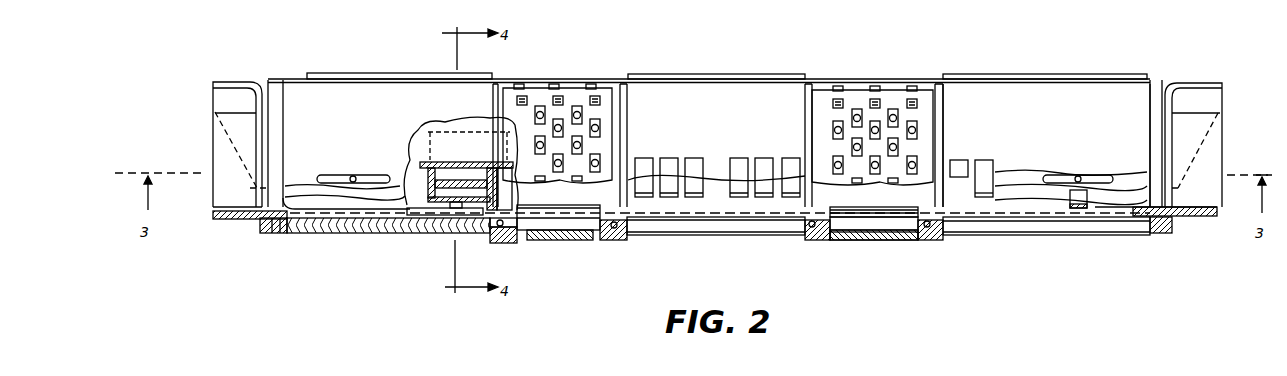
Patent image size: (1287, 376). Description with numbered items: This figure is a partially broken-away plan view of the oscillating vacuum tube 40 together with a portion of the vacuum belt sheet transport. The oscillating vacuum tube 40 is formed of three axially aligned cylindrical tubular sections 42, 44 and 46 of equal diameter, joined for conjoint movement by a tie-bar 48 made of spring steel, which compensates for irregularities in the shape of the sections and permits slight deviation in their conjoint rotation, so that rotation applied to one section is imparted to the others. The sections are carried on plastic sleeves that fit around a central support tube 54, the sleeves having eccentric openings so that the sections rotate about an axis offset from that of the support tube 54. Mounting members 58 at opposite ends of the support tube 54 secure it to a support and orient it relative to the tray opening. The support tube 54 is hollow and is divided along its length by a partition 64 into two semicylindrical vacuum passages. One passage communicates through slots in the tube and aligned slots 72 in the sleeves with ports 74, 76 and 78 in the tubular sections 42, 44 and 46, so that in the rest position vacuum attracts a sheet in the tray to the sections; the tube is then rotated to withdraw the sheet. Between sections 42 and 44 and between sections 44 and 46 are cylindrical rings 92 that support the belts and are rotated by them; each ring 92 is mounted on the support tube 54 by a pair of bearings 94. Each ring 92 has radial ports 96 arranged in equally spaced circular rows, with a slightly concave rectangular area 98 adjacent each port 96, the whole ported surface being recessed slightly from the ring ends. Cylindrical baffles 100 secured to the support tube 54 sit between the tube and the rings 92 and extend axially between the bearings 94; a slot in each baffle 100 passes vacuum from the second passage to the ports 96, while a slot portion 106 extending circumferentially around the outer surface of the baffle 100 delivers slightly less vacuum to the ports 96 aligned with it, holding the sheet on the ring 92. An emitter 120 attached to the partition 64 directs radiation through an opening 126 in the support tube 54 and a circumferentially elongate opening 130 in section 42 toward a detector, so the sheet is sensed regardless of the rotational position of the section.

The oscillating vacuum tube 40 is at (278, 68).
The tubular section 42 is at (311, 96).
The tubular section 44 is at (720, 88).
The tubular section 46 is at (1085, 80).
The tie-bar 48 is at (1005, 78).
The central support tube 54 is at (415, 127).
The mounting member 58 is at (227, 97).
The partition 64 is at (410, 146).
The slot 72 is at (1080, 200).
The port 74 is at (352, 175).
The port 76 is at (962, 162).
The port 78 is at (737, 160).
The cylindrical ring 92 is at (610, 245).
The bearing 94 is at (505, 240).
The port 96 is at (595, 96).
The rectangular area 98 is at (833, 131).
The cylindrical baffle 100 is at (820, 237).
The slot portion 106 is at (860, 238).
The emitter 120 is at (438, 228).
The opening 126 is at (462, 240).
The opening 130 is at (455, 232).